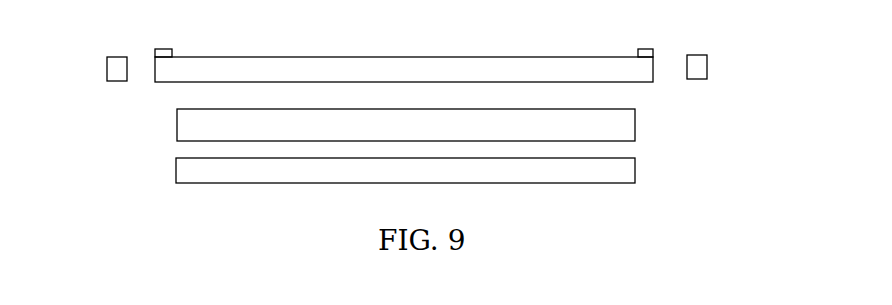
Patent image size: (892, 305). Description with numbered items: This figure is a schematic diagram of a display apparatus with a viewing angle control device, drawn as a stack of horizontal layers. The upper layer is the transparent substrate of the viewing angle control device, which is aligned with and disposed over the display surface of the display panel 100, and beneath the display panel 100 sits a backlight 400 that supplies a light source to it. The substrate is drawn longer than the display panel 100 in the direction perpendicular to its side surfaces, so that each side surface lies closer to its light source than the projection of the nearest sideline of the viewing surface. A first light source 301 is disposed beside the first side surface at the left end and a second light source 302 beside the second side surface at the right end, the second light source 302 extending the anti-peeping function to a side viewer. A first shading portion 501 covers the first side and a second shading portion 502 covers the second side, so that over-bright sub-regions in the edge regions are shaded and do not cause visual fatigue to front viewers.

The first light source 301 is at (107, 69).
The second light source 302 is at (707, 61).
The first shading portion 501 is at (156, 50).
The second shading portion 502 is at (645, 47).
The display panel 100 is at (635, 121).
The backlight 400 is at (635, 166).